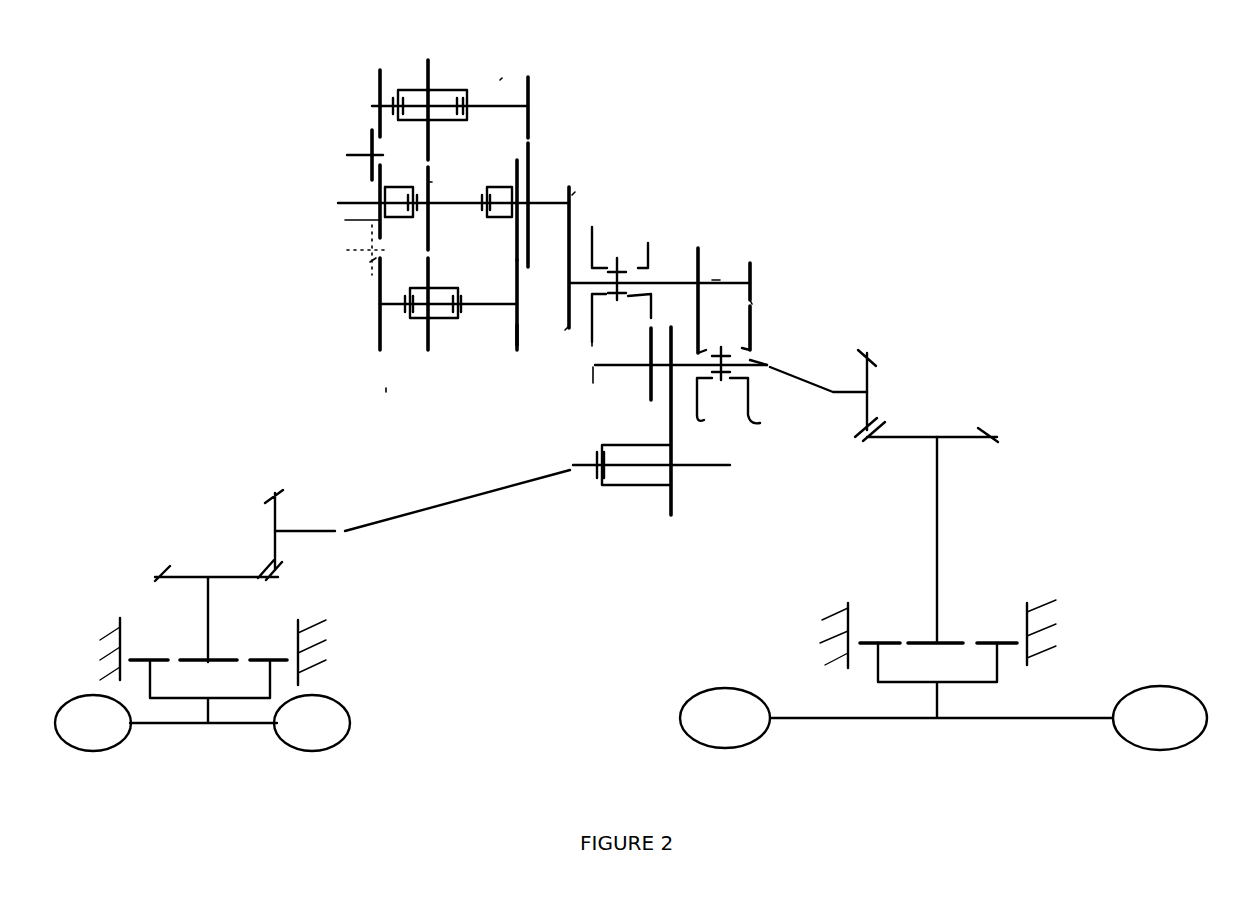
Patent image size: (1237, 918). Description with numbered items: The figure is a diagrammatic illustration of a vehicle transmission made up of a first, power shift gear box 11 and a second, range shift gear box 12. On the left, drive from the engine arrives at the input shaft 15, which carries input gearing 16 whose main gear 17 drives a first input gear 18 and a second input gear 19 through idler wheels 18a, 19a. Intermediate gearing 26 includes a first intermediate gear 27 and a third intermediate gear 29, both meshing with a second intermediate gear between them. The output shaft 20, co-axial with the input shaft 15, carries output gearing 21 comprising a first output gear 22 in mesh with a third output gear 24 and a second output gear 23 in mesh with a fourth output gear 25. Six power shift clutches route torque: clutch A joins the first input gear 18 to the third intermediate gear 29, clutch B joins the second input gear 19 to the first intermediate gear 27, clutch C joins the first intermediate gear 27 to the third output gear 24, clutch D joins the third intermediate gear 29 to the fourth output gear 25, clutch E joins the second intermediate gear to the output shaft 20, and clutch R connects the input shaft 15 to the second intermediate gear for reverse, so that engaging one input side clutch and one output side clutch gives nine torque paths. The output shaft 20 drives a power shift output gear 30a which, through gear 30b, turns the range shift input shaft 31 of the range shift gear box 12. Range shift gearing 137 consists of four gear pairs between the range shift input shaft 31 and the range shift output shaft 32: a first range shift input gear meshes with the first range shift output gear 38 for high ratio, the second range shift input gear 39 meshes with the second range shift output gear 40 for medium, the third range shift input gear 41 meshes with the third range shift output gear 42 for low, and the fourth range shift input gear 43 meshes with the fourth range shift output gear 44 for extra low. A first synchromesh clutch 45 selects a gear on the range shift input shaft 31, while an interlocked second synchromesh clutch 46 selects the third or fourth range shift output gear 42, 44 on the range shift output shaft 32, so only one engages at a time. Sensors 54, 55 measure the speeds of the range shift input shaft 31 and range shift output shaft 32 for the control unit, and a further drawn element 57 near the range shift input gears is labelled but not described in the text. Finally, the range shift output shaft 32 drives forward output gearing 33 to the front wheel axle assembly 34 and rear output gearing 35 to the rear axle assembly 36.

The power shift gear box 11 is at (510, 77).
The range shift gear box 12 is at (770, 278).
The input shaft 15 is at (338, 203).
The input gearing 16 is at (389, 397).
The main gear 17 is at (380, 208).
The first input gear 18 is at (380, 340).
The idler wheel 18a is at (370, 262).
The second input gear 19 is at (379, 82).
The idler wheel 19a is at (372, 138).
The output shaft 20 is at (546, 203).
The output gearing 21 is at (531, 382).
The first output gear 22 is at (530, 160).
The second output gear 23 is at (517, 245).
The third output gear 24 is at (531, 90).
The fourth output gear 25 is at (519, 337).
The intermediate gearing 26 is at (431, 376).
The first intermediate gear 27 is at (430, 65).
The third intermediate gear 29 is at (430, 182).
The power shift output gear 30a is at (575, 195).
The gear 30b is at (568, 330).
The range shift input shaft 31 is at (727, 283).
The range shift output shaft 32 is at (752, 363).
The forward output gearing 33 is at (630, 487).
The front wheel axle assembly 34 is at (354, 670).
The rear output gearing 35 is at (885, 409).
The rear axle assembly 36 is at (987, 630).
The first range shift output gear 38 is at (593, 380).
The second range shift input gear 39 is at (700, 248).
The second range shift output gear 40 is at (651, 397).
The third range shift input gear 41 is at (716, 275).
The third range shift output gear 42 is at (702, 411).
The fourth range shift input gear 43 is at (752, 262).
The fourth range shift output gear 44 is at (757, 411).
The first synchromesh clutch 45 is at (655, 240).
The second synchromesh clutch 46 is at (722, 385).
The sensor 54 is at (582, 262).
The sensor 55 is at (592, 345).
The pinion gear 57 is at (630, 250).
The range shift gearing 137 is at (768, 298).
The power shift clutch A is at (422, 320).
The power shift clutch B is at (400, 90).
The power shift clutch C is at (465, 90).
The power shift clutch D is at (457, 315).
The power shift clutch E is at (488, 188).
The power shift clutch R is at (345, 220).